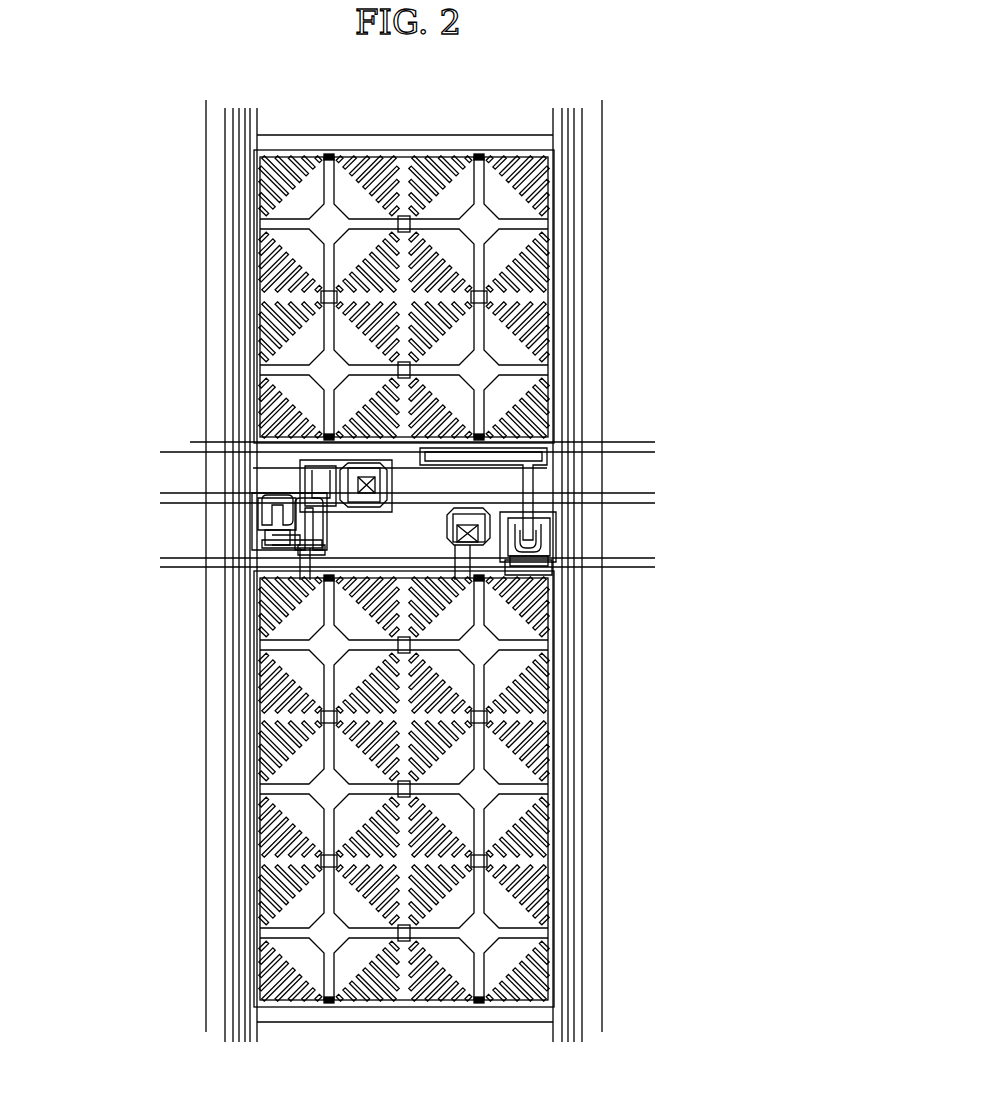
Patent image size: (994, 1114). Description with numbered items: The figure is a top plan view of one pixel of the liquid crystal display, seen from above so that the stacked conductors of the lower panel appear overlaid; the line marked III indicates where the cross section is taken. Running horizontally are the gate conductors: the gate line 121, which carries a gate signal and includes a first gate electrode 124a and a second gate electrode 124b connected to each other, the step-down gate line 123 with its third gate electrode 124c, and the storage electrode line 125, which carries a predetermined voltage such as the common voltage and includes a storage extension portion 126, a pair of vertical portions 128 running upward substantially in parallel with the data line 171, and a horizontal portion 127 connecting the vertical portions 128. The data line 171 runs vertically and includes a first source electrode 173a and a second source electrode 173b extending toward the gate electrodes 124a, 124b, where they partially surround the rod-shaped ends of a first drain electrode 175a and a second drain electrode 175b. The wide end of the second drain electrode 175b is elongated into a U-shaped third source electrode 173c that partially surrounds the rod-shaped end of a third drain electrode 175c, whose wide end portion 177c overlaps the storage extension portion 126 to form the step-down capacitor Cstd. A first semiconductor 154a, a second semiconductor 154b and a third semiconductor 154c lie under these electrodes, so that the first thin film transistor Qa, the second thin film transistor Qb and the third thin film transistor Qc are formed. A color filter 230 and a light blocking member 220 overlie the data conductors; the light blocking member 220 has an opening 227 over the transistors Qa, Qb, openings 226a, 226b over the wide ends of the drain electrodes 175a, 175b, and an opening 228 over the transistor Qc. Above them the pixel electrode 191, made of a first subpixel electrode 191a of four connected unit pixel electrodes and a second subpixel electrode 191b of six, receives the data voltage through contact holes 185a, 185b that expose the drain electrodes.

The gate line 121 is at (600, 490).
The step-down gate line 123 is at (590, 574).
The first gate electrode 124a is at (310, 542).
The second gate electrode 124b is at (330, 478).
The third gate electrode 124c is at (556, 555).
The storage electrode line 125 is at (600, 447).
The storage extension portion 126 is at (560, 468).
The horizontal portion 127 is at (494, 152).
The vertical portions 128 is at (568, 290).
The first semiconductor 154a is at (280, 518).
The second semiconductor 154b is at (335, 555).
The third semiconductor 154c is at (535, 590).
The data line 171 is at (233, 245).
The first source electrode 173a is at (300, 540).
The second source electrode 173b is at (300, 498).
The third source electrode 173c is at (560, 582).
The first drain electrode 175a is at (262, 508).
The second drain electrode 175b is at (330, 550).
The third drain electrode 175c is at (560, 522).
The wide end portion 177c is at (555, 462).
The contact hole 185a is at (355, 578).
The contact hole 185b is at (520, 560).
The pixel electrode 191 is at (498, 579).
The first subpixel electrode 191a is at (556, 348).
The second subpixel electrode 191b is at (556, 768).
The light blocking member 220 is at (553, 190).
The opening 226a is at (345, 468).
The opening 226b is at (470, 545).
The opening 227 is at (275, 530).
The opening 228 is at (560, 548).
The color filter 230 is at (206, 212).
The first thin film transistor Qa is at (255, 480).
The second thin film transistor Qb is at (312, 466).
The third thin film transistor Qc is at (540, 582).
The step-down capacitor Cstd is at (515, 442).
The section line III is at (200, 510).